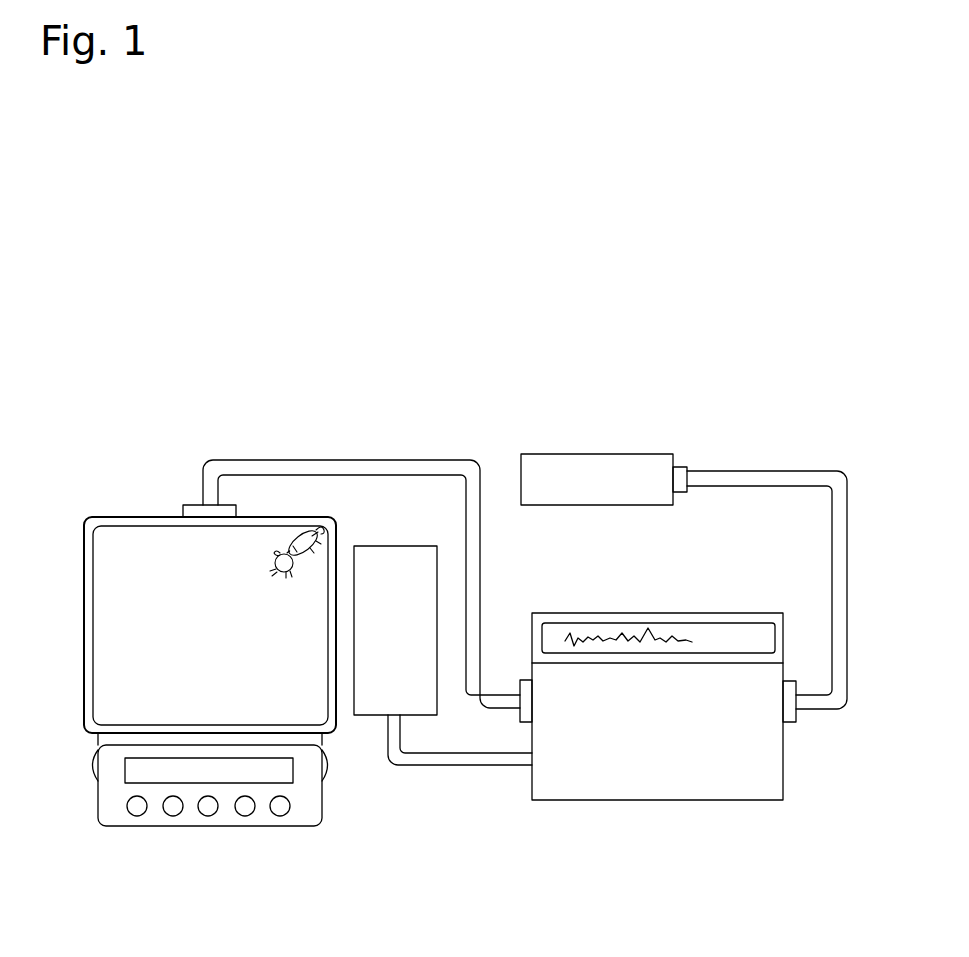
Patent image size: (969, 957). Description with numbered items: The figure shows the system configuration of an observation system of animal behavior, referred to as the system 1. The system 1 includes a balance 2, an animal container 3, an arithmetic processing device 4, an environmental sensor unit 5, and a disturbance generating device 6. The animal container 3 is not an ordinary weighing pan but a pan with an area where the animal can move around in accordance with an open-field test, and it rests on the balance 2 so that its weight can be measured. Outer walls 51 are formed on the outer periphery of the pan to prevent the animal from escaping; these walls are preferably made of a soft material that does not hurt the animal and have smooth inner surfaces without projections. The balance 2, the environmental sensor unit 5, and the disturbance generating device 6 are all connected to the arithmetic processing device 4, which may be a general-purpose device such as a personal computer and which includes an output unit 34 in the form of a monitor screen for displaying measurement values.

The system 1 is at (826, 387).
The balance 2 is at (97, 800).
The animal container 3 is at (83, 657).
The arithmetic processing device 4 is at (790, 763).
The environmental sensor unit 5 is at (580, 452).
The disturbance generating device 6 is at (367, 721).
The output unit 34 is at (733, 635).
The outer walls 51 is at (122, 516).